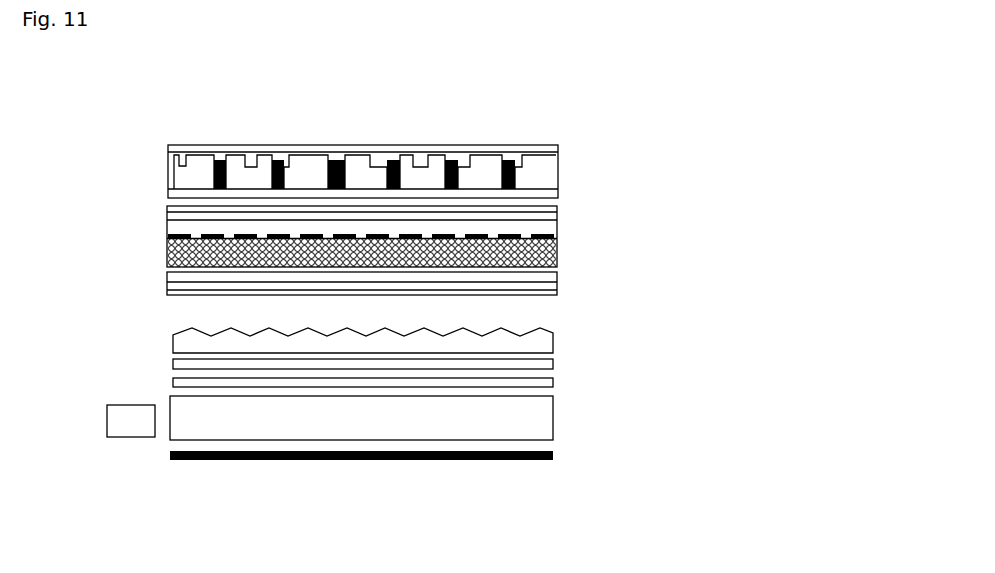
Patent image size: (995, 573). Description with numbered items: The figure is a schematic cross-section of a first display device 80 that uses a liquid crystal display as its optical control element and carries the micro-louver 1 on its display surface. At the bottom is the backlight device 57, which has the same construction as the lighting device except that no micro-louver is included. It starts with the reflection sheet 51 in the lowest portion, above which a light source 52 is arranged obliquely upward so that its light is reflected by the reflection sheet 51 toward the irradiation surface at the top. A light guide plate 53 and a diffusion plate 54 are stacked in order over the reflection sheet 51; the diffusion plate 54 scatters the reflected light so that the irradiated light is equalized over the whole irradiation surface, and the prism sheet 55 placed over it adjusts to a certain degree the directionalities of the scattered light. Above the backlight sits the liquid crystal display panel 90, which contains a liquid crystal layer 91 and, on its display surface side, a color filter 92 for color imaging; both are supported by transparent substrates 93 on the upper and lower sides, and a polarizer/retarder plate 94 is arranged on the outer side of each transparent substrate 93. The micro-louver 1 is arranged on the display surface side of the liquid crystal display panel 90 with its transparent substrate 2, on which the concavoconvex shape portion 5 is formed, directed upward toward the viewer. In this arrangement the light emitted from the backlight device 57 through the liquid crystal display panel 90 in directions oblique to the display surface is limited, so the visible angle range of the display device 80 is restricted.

The micro-louver 1 is at (169, 173).
The transparent substrate 2 is at (524, 146).
The concavoconvex shape portion 5 is at (526, 161).
The liquid crystal display panel 90 is at (135, 246).
The liquid crystal layer 91 is at (558, 253).
The color filter 92 is at (558, 238).
The transparent substrates 93 is at (560, 227).
The polarizer/retarder plate 94 is at (560, 221).
The reflection sheet 51 is at (553, 456).
The light source 52 is at (126, 413).
The light guide plate 53 is at (553, 427).
The diffusion plate 54 is at (553, 383).
The prism sheet 55 is at (553, 368).
The backlight device 57 is at (663, 385).
The first display device 80 is at (584, 489).